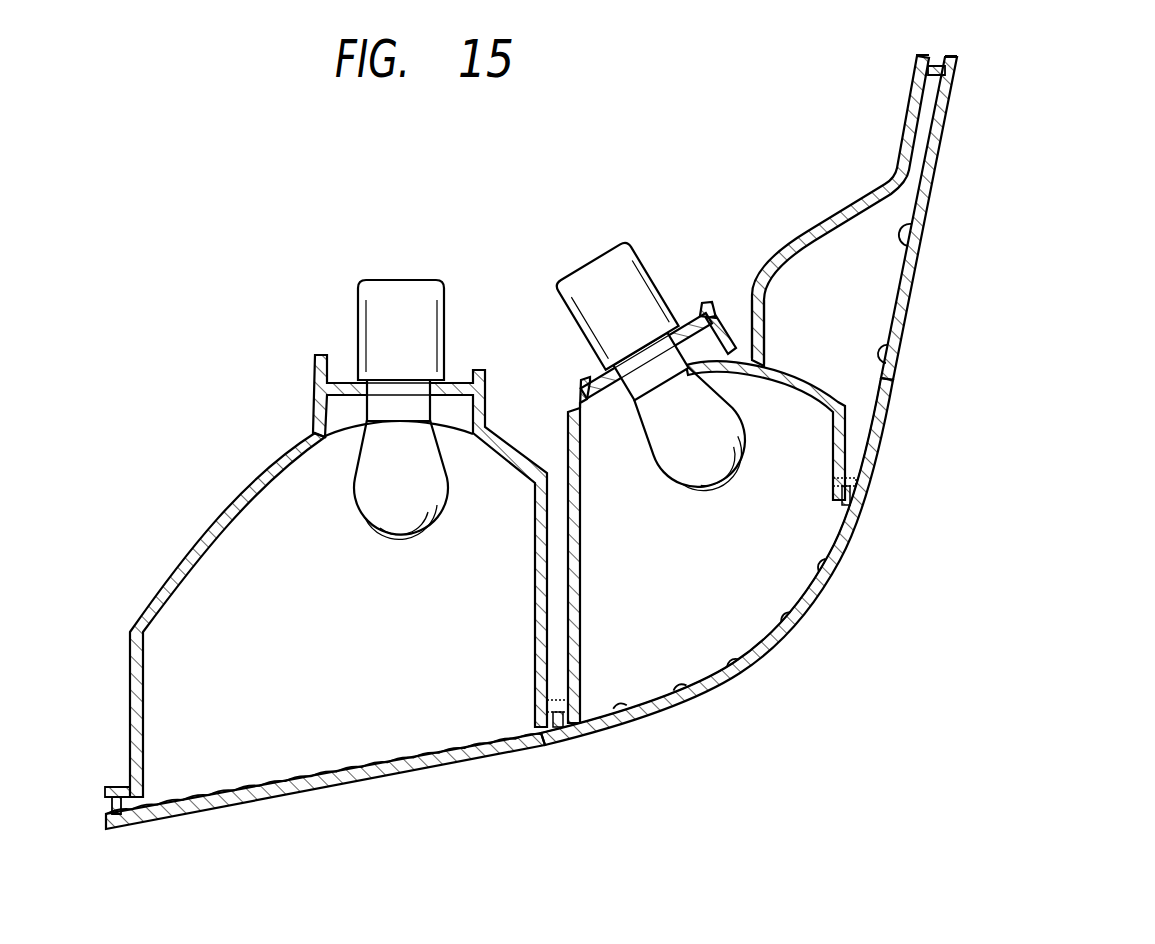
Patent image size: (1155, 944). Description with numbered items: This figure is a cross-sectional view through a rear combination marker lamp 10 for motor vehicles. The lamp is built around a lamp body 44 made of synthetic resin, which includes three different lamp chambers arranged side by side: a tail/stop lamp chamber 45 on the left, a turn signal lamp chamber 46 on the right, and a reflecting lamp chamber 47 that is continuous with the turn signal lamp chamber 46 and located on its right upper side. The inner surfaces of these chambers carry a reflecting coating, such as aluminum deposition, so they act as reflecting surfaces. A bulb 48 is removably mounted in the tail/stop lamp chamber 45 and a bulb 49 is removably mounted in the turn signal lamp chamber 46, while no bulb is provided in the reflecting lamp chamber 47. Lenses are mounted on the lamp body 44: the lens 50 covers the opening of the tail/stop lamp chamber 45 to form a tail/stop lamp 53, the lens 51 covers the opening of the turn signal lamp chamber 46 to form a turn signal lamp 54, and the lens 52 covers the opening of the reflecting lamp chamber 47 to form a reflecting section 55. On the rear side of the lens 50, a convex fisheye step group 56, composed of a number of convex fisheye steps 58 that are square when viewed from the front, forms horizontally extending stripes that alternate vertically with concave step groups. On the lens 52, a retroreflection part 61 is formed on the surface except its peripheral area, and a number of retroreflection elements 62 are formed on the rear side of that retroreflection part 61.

The lamp assembly 10 is at (1051, 175).
The lamp body 44 is at (662, 170).
The tail/stop lamp chamber 45 is at (507, 437).
The turn signal lamp chamber 46 is at (697, 302).
The reflecting lamp chamber 47 is at (797, 232).
The bulb 48 is at (393, 548).
The bulb 49 is at (713, 499).
The lens 50 is at (380, 781).
The lens 51 is at (713, 692).
The lens 52 is at (948, 122).
The tail/stop lamp 53 is at (482, 590).
The turn signal lamp 54 is at (647, 605).
The reflecting section 55 is at (833, 313).
The convex fisheye step group 56 is at (343, 772).
The convex fisheye step 58 is at (235, 792).
The retroreflection part 61 is at (915, 295).
The retroreflection element 62 is at (908, 232).